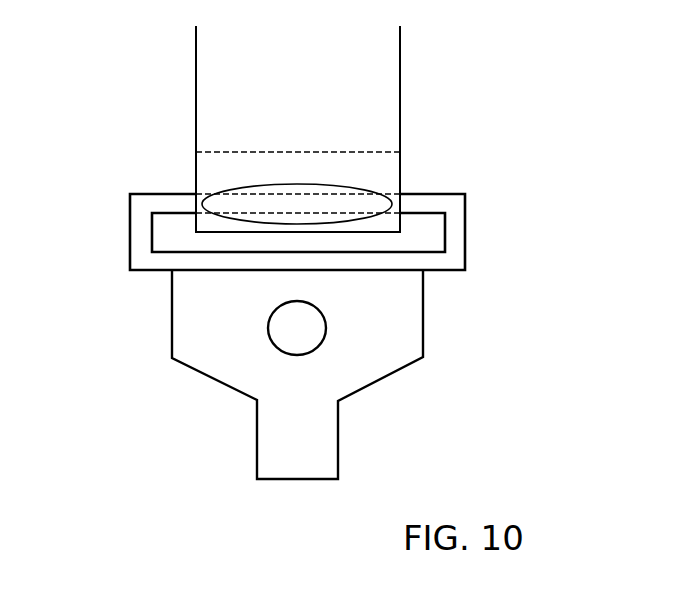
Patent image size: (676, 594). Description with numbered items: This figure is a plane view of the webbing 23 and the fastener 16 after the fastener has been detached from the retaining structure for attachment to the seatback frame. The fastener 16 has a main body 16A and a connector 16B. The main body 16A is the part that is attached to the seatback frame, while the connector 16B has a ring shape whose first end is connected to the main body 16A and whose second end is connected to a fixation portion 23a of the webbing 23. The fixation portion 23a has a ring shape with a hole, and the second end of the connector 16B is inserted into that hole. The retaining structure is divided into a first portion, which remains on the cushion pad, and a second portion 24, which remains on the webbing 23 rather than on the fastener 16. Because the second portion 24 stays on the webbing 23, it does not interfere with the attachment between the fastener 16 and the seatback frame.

The fastener 16 is at (334, 336).
The main body 16A is at (222, 355).
The connector 16B is at (455, 233).
The webbing 23 is at (308, 129).
The fixation portion 23a is at (208, 173).
The second portion 24 is at (323, 203).